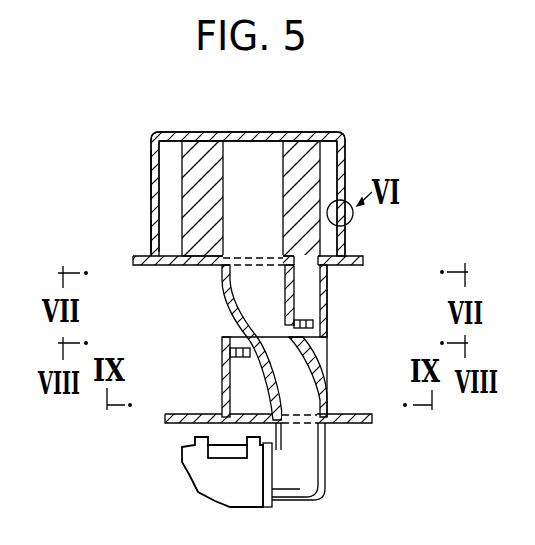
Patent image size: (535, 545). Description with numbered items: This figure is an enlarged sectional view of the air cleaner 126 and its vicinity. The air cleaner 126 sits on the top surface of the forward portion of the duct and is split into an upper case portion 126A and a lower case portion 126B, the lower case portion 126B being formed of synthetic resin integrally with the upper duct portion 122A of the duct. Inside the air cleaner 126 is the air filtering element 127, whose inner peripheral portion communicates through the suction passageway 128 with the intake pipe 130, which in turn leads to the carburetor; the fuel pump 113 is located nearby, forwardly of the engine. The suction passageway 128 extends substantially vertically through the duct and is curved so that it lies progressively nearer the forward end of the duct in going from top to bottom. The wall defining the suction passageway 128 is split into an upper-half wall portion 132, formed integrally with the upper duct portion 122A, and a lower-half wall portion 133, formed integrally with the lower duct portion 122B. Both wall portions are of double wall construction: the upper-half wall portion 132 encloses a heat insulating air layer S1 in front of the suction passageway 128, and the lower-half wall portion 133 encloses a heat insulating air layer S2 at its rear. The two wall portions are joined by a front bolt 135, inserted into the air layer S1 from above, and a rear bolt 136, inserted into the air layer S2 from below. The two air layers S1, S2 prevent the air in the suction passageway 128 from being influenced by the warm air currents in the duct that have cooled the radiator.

The air cleaner 126 is at (163, 131).
The upper case portion 126A is at (153, 166).
The air filtering element 127 is at (190, 201).
The lower case portion 126B is at (152, 241).
The upper duct portion 122A is at (145, 266).
The upper-half wall portion 132 is at (253, 309).
The suction passageway 128 is at (234, 318).
The rear bolt 136 is at (241, 358).
The heat insulating air layer S2 is at (251, 401).
The fuel pump 113 is at (207, 484).
The heat insulating air layer S1 is at (306, 284).
The front bolt 135 is at (309, 319).
The lower-half wall portion 133 is at (324, 372).
The lower duct portion 122B is at (357, 424).
The intake pipe 130 is at (323, 490).